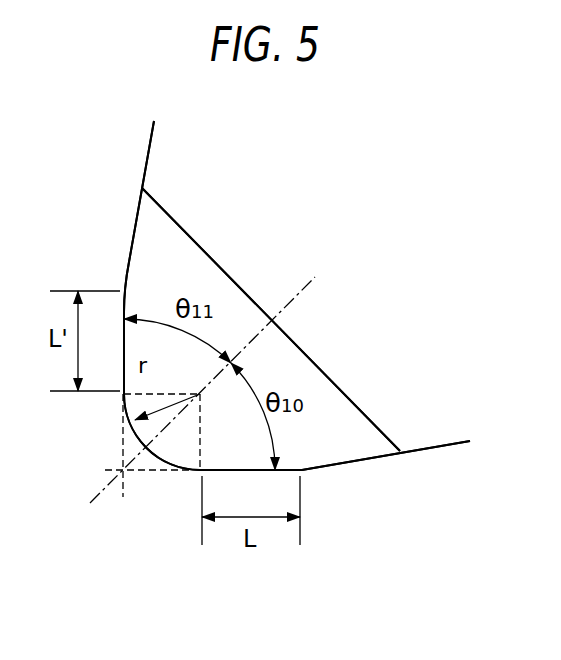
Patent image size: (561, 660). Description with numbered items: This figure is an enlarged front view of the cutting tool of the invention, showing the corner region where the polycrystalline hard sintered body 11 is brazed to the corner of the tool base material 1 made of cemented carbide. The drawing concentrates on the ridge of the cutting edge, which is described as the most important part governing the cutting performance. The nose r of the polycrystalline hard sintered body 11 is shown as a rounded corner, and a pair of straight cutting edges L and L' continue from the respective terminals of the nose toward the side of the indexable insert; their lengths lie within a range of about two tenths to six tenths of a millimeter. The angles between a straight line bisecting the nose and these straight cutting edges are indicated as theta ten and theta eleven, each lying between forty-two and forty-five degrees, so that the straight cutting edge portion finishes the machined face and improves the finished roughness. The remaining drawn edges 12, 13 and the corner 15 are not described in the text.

The tool base material 1 is at (346, 359).
The polycrystalline hard sintered body 11 is at (240, 316).
The flank face (lower edge) 12 is at (368, 460).
The side face (left edge) 13 is at (148, 262).
The rounded corner (honed edge) 15 is at (132, 424).